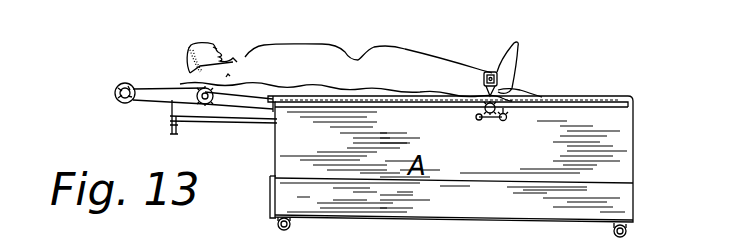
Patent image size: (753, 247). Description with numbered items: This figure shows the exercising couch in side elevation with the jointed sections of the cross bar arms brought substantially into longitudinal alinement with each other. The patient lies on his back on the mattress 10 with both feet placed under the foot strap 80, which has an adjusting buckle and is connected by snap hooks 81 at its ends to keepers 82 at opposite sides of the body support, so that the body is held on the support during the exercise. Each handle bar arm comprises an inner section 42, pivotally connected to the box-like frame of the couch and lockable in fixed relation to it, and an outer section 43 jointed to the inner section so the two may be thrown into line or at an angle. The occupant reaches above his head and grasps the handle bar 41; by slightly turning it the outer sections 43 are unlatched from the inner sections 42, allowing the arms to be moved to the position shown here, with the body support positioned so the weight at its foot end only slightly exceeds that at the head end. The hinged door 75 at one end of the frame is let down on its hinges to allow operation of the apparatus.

The mattress 10 is at (537, 97).
The handle bar 41 is at (115, 92).
The inner section 42 is at (243, 102).
The outer section 43 is at (163, 97).
The hinged door 75 is at (272, 198).
The foot strap 80 is at (489, 72).
The snap hooks 81 is at (496, 122).
The keepers 82 is at (480, 118).